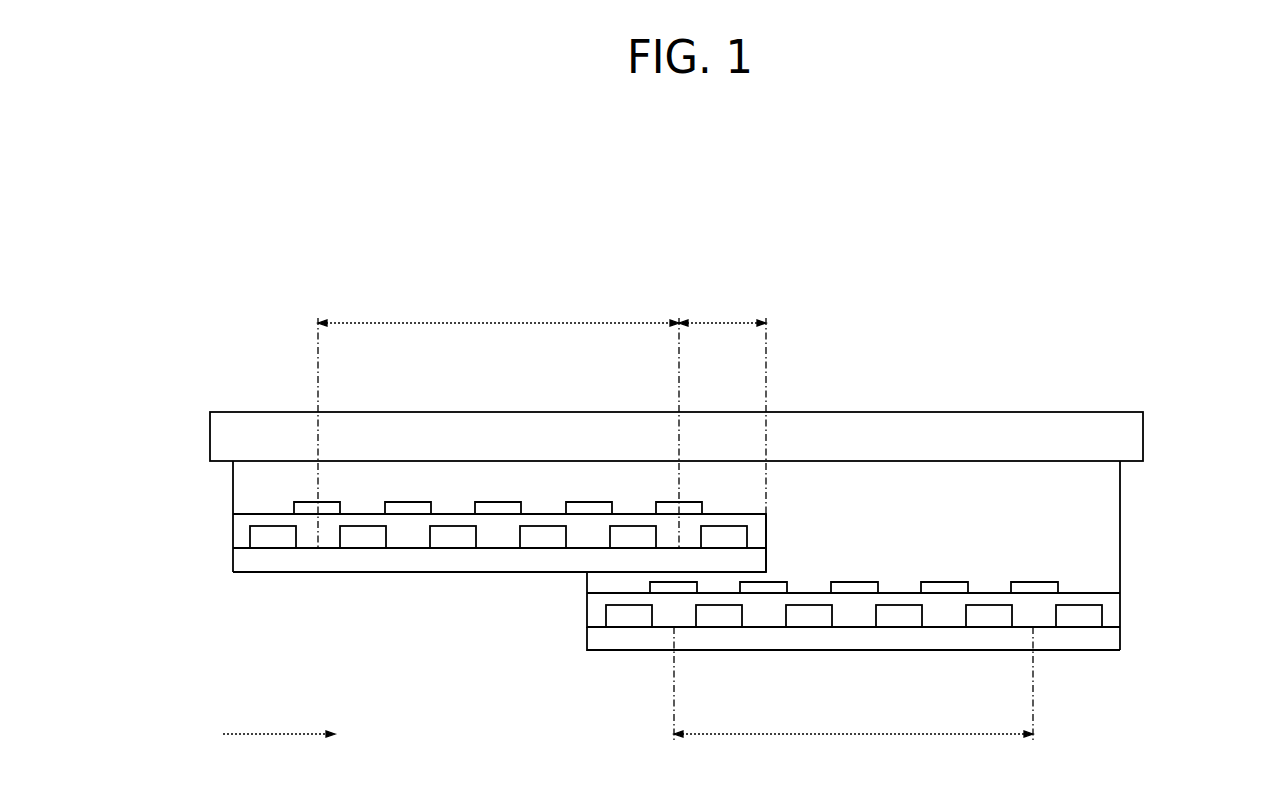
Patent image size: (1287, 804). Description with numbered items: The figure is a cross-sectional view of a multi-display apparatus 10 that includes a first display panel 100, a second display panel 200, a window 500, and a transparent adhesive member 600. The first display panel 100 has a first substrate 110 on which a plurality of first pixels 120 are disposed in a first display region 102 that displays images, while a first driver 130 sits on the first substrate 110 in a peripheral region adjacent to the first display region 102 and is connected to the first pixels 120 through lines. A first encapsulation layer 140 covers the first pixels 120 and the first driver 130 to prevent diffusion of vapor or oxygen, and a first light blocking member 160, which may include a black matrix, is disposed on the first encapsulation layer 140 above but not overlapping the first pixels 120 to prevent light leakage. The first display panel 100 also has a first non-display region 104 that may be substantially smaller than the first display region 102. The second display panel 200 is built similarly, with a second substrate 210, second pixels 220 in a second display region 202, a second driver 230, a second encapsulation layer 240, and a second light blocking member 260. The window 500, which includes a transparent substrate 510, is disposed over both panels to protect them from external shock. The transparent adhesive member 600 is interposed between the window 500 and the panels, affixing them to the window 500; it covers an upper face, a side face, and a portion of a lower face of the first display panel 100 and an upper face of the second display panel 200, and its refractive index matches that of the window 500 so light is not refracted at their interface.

The multi-display apparatus 10 is at (925, 250).
The first display panel 100 is at (192, 592).
The first display region 102 is at (498, 421).
The first non-display region 104 is at (722, 404).
The first substrate 110 is at (233, 559).
The first pixels 120 is at (362, 531).
The first driver 130 is at (722, 531).
The first encapsulation layer 140 is at (236, 526).
The first light blocking member 160 is at (495, 503).
The second display panel 200 is at (1163, 671).
The second display region 202 is at (853, 697).
The second substrate 210 is at (1120, 637).
The second pixels 220 is at (717, 614).
The second driver 230 is at (629, 612).
The second encapsulation layer 240 is at (1119, 603).
The second light blocking member 260 is at (940, 583).
The window 500 is at (1165, 408).
The transparent substrate 510 is at (210, 435).
The transparent adhesive member 600 is at (1118, 527).